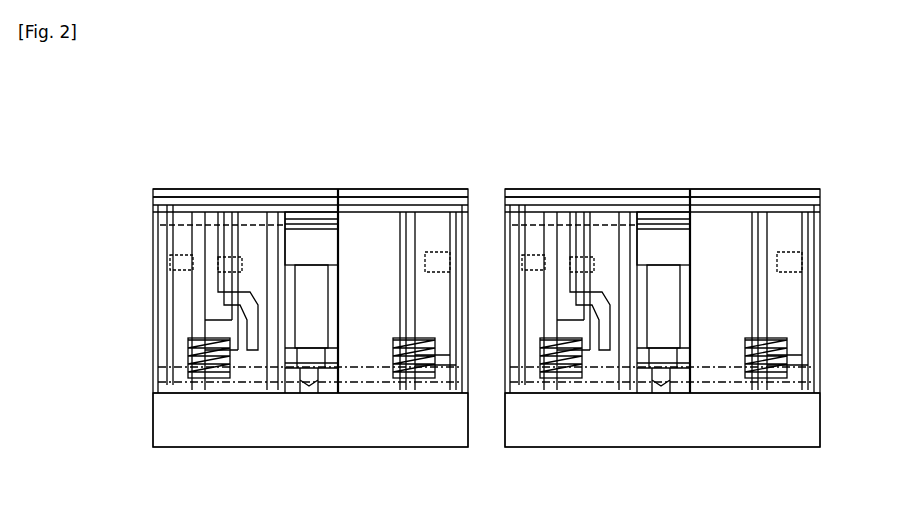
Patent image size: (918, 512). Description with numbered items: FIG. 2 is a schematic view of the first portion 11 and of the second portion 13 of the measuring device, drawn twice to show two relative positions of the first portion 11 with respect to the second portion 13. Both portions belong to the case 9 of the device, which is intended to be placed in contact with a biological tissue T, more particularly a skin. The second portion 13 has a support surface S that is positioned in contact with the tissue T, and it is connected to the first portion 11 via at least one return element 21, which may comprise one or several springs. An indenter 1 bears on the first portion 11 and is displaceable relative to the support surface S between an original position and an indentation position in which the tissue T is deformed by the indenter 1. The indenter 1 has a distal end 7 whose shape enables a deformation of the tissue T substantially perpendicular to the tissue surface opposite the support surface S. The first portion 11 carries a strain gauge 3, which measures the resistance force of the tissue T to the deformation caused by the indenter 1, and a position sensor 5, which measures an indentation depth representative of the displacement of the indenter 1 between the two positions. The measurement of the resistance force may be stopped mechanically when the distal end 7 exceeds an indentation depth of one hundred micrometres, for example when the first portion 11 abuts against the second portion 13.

The indenter 1 is at (340, 320).
The strain gauge 3 is at (313, 232).
The position sensor 5 is at (255, 278).
The distal end 7 is at (312, 397).
The case 9 is at (168, 160).
The first portion 11 is at (156, 197).
The second portion 13 is at (178, 391).
The return element 21 is at (203, 372).
The support surface S is at (248, 393).
The tissue T is at (168, 417).